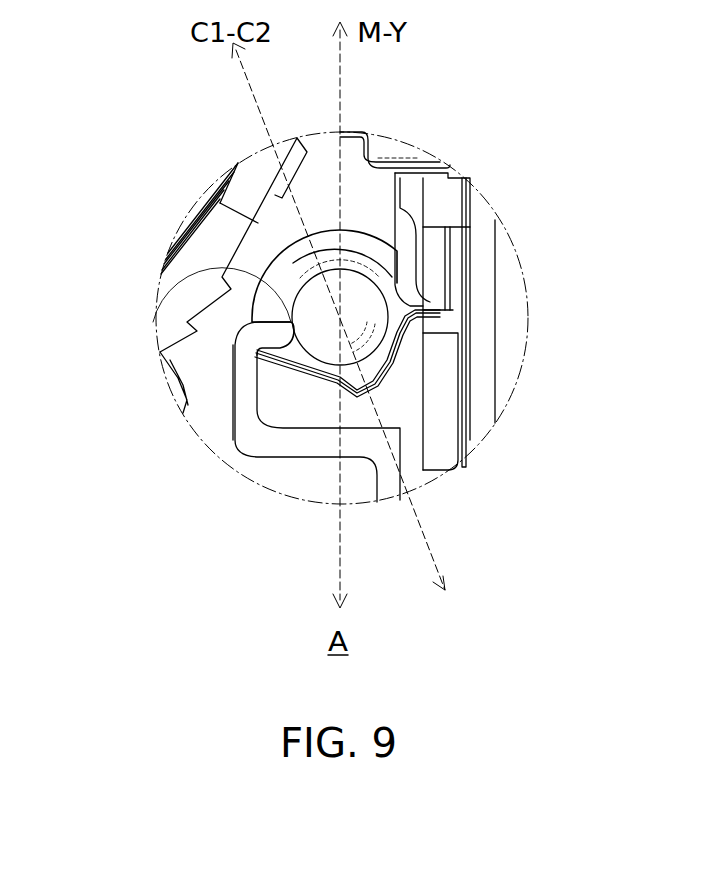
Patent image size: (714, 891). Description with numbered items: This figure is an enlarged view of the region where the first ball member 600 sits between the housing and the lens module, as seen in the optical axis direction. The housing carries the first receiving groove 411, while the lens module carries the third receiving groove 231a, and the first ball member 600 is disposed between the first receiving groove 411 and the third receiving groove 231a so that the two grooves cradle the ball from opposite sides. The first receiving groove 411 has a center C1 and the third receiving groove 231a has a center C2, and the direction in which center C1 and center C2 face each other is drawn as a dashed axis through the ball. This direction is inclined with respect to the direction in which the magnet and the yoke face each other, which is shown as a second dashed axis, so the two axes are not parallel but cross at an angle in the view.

The third receiving groove 231a is at (160, 312).
The center of the third receiving groove C2 is at (356, 243).
The first ball member 600 is at (386, 340).
The first receiving groove 411 is at (372, 386).
The center of the first receiving groove C1 is at (460, 393).